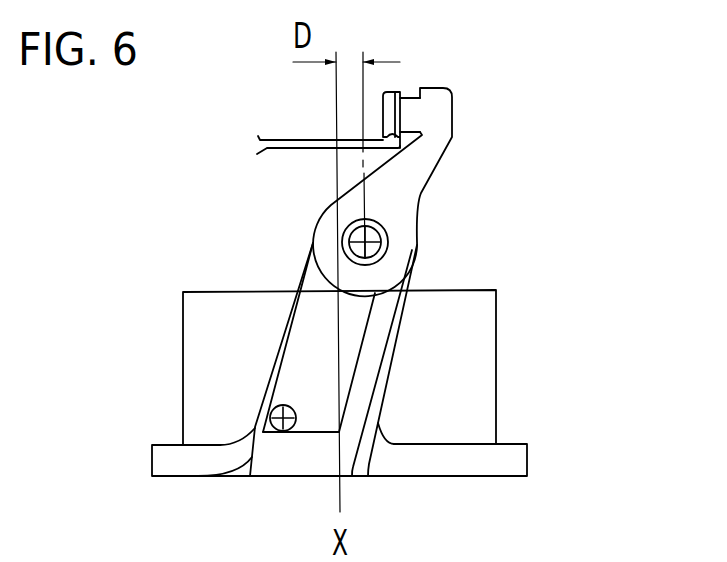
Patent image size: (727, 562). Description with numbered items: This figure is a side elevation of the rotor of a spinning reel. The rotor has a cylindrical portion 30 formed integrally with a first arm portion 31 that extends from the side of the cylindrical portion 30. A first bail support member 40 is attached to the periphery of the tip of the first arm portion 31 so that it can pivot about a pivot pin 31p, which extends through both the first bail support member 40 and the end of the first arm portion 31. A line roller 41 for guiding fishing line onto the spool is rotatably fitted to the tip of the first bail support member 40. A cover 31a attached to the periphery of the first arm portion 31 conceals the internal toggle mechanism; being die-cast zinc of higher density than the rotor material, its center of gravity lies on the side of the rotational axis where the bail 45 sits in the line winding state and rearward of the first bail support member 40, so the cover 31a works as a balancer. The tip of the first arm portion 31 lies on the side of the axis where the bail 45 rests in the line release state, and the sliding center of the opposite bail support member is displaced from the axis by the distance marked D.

The cylindrical portion 30 is at (183, 322).
The first arm portion 31 is at (370, 372).
The cover 31a is at (353, 346).
The pivot pin 31p is at (413, 207).
The first bail support member 40 is at (450, 135).
The line roller 41 is at (388, 90).
The bail 45 is at (280, 140).